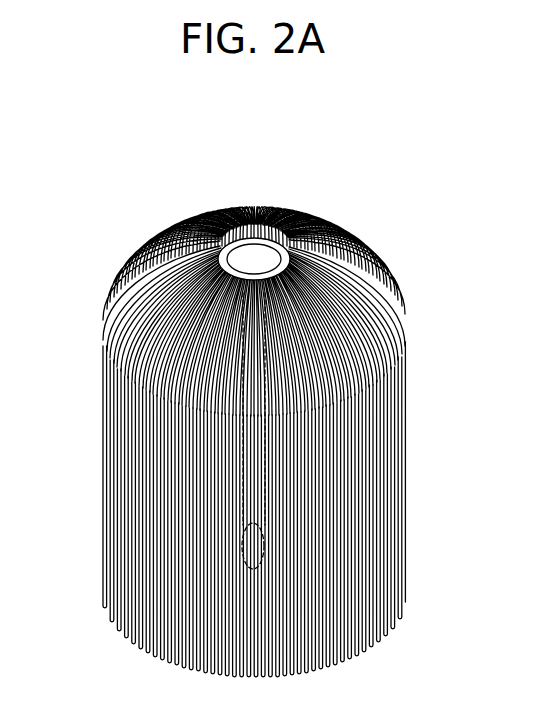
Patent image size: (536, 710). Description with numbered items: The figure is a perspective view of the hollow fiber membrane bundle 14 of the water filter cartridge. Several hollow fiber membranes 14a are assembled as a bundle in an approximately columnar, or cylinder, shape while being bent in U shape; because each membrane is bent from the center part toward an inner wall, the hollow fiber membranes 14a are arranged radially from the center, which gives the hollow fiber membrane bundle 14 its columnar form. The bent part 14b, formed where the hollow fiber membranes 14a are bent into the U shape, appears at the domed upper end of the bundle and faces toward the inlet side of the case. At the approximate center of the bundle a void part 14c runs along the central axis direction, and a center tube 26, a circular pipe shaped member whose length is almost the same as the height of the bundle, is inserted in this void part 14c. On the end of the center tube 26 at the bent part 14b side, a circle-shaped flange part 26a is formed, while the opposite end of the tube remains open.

The hollow fiber membrane bundle 14 is at (301, 398).
The hollow fiber membrane 14a is at (406, 300).
The bent part 14b is at (178, 212).
The void part 14c is at (265, 497).
The center tube 26 is at (308, 200).
The flange part 26a is at (253, 250).